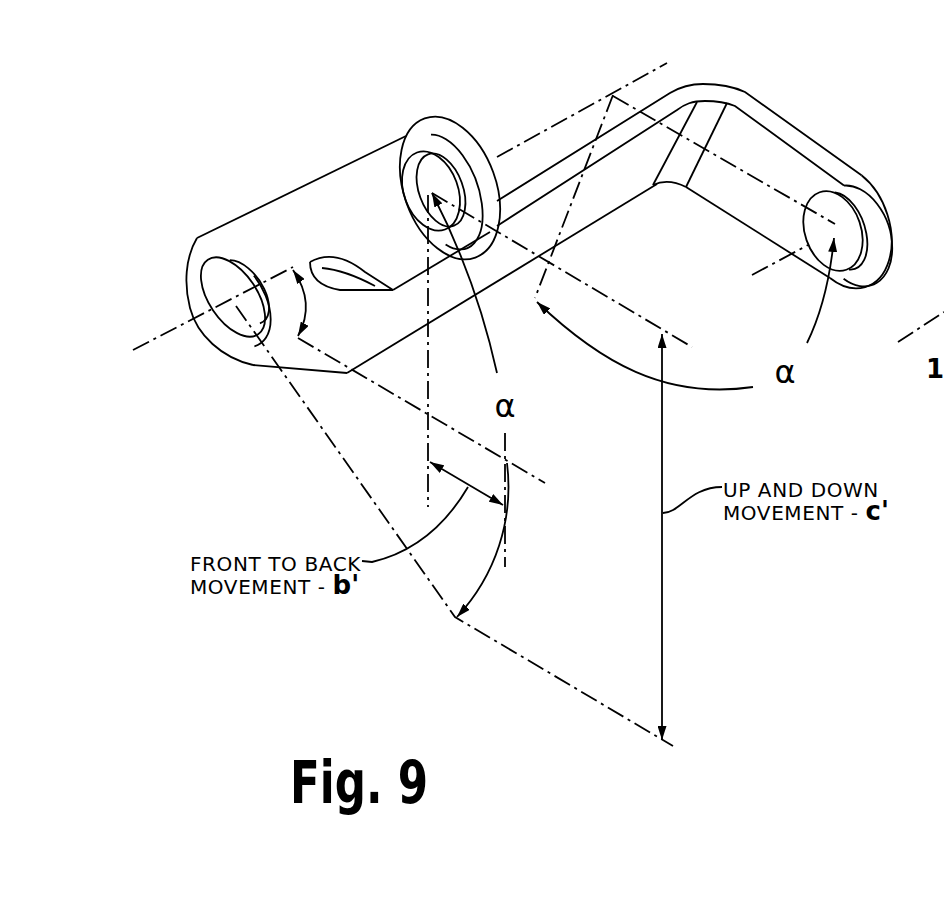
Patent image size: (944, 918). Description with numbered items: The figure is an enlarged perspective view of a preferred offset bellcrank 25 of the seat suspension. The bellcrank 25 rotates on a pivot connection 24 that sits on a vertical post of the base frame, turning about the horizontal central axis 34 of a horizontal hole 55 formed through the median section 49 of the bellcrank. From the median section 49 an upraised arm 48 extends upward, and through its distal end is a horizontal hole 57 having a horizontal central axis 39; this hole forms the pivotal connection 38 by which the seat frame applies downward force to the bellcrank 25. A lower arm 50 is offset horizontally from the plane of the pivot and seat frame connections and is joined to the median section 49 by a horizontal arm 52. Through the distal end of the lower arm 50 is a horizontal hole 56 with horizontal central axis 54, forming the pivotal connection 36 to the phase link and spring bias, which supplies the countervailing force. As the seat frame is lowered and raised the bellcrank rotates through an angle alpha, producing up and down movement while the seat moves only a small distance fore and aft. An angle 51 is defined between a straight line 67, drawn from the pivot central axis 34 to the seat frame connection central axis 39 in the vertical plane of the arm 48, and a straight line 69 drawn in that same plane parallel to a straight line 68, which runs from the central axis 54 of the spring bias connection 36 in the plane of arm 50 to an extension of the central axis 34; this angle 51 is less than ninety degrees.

The pivot connection 24 is at (228, 297).
The bellcrank 25 is at (350, 183).
The horizontal central axis 34 is at (183, 326).
The pivotal connection to spring bias 36 is at (835, 228).
The pivotal connection to seat frame 38 is at (436, 182).
The horizontal central axis 39 is at (390, 212).
The upraised arm 48 is at (393, 147).
The median section 49 is at (253, 365).
The lower arm 50 is at (760, 216).
The angle 51 is at (313, 303).
The horizontal arm 52 is at (498, 265).
The horizontal central axis 54 is at (803, 246).
The horizontal hole 55 is at (221, 259).
The horizontal hole 56 is at (848, 218).
The horizontal hole 57 is at (443, 183).
The straight line 67 is at (272, 272).
The straight line 68 is at (758, 173).
The straight line 69 is at (380, 388).